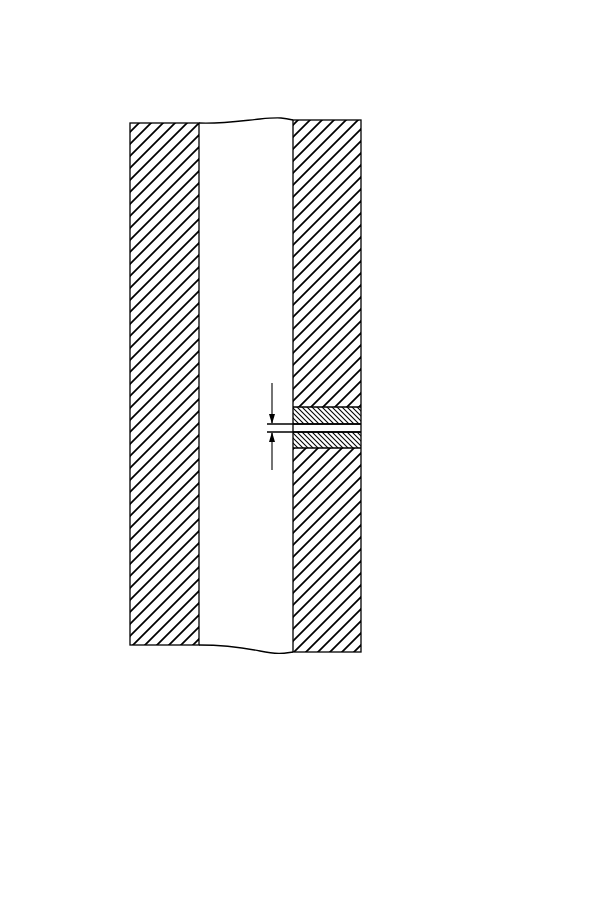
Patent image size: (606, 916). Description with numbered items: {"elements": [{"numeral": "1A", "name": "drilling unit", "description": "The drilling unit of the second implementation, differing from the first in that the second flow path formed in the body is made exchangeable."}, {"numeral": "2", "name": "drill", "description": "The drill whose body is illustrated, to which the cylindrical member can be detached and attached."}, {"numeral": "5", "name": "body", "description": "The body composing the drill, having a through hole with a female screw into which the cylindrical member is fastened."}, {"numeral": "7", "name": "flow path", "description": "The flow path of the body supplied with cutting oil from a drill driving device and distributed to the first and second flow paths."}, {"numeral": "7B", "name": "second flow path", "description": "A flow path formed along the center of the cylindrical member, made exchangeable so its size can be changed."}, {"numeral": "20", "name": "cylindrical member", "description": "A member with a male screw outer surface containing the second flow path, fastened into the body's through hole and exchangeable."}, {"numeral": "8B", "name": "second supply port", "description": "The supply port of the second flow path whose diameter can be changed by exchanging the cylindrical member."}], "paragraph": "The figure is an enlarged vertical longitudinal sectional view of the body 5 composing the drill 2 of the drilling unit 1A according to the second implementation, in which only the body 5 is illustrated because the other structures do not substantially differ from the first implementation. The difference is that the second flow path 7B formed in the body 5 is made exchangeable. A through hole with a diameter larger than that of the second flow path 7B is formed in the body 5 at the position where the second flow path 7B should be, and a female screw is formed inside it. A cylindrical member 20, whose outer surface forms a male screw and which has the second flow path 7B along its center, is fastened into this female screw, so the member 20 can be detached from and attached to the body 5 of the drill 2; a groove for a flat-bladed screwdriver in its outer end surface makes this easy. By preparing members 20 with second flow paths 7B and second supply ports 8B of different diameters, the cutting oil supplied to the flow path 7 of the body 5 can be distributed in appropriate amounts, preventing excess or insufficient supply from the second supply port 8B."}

The connector (cylindrical body) 1A is at (120, 81).
The body wall 2 is at (129, 147).
The outer wall 5 is at (130, 425).
The through hole 7 is at (272, 205).
The upper inner layer 7B is at (352, 412).
The gap 20 is at (362, 420).
The lower inner layer 8B is at (362, 438).